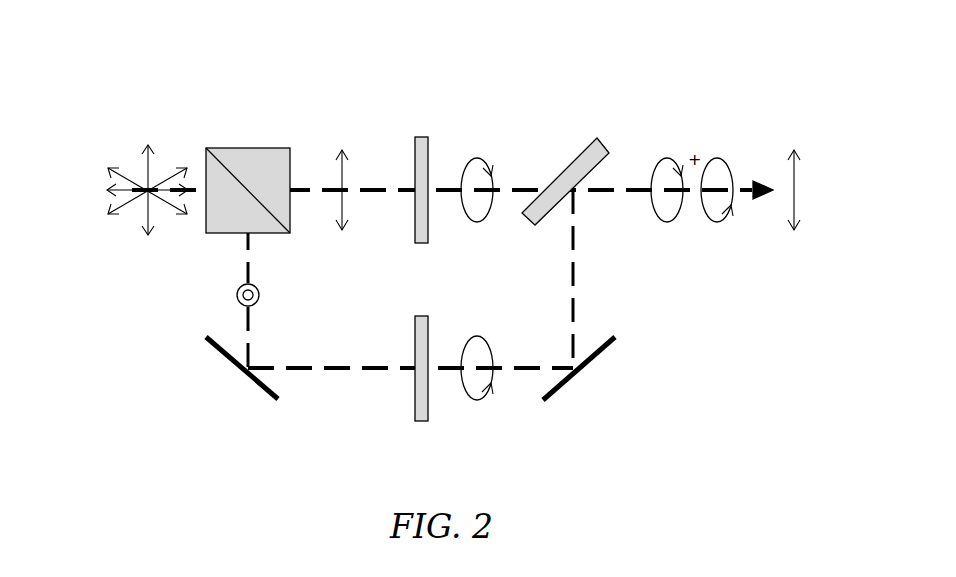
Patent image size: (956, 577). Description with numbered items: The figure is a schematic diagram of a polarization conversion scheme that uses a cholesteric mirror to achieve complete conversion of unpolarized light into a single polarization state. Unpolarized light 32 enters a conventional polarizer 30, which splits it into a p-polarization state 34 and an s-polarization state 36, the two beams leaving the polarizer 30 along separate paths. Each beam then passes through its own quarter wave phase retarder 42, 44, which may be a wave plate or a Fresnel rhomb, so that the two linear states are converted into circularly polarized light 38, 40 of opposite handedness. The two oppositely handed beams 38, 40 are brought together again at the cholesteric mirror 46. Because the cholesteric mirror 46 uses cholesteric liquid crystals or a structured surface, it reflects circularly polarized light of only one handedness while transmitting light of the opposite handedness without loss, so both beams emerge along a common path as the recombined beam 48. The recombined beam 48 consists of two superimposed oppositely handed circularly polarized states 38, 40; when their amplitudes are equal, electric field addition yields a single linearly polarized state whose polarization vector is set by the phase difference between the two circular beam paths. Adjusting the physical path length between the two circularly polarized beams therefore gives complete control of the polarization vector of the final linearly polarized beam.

The polarizer 30 is at (266, 148).
The unpolarized light 32 is at (127, 147).
The p-polarization state 34 is at (340, 178).
The s-polarization state 36 is at (238, 288).
The circularly polarized light 38 is at (480, 160).
The circularly polarized light 40 is at (718, 223).
The quarter wave phase retarder 42 is at (430, 152).
The quarter wave phase retarder 44 is at (415, 421).
The cholesteric mirror 46 is at (590, 140).
The recombined beam 48 is at (798, 176).